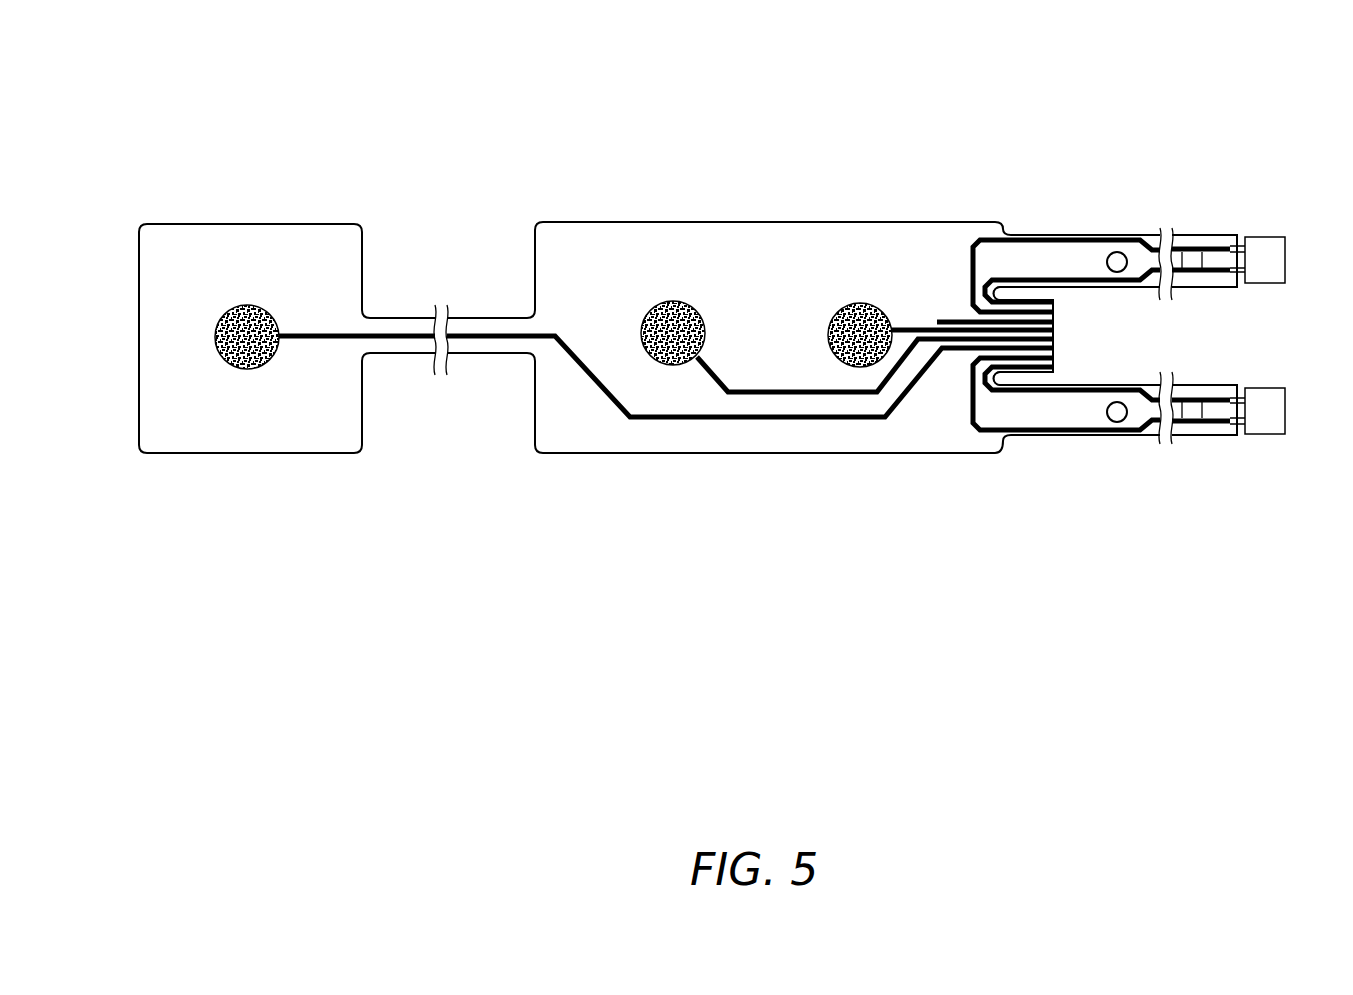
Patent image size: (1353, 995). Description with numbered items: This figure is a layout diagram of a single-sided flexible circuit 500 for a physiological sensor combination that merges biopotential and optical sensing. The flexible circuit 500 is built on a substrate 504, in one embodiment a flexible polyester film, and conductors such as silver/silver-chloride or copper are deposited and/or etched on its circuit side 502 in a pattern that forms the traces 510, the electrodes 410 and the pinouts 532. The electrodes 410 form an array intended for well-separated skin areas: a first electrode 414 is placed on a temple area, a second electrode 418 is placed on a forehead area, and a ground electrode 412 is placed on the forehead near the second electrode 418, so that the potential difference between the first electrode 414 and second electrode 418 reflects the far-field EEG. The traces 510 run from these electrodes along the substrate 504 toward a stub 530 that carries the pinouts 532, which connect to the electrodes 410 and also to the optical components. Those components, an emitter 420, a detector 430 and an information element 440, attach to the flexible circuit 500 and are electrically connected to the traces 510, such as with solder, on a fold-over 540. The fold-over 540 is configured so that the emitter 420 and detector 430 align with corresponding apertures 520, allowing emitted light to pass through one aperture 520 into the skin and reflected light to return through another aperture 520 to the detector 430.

The flexible circuit 500 is at (753, 72).
The circuit side 502 is at (582, 440).
The substrate 504 is at (598, 220).
The electrodes 410 is at (636, 297).
The ground electrode 412 is at (693, 310).
The first electrode 414 is at (263, 367).
The second electrode 418 is at (855, 305).
The traces 510 is at (718, 382).
The apertures 520 is at (1112, 252).
The stub 530 is at (1042, 301).
The pinouts 532 is at (1053, 333).
The fold-over 540 is at (1197, 273).
The information element 440 is at (1192, 244).
The emitter 420 is at (1265, 237).
The detector 430 is at (1265, 442).